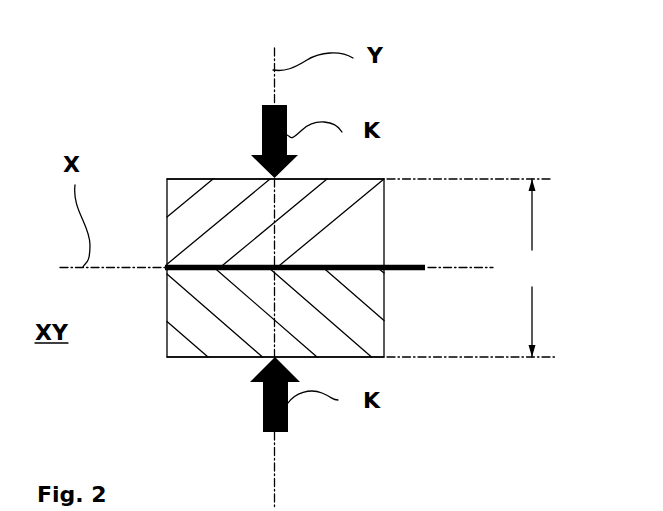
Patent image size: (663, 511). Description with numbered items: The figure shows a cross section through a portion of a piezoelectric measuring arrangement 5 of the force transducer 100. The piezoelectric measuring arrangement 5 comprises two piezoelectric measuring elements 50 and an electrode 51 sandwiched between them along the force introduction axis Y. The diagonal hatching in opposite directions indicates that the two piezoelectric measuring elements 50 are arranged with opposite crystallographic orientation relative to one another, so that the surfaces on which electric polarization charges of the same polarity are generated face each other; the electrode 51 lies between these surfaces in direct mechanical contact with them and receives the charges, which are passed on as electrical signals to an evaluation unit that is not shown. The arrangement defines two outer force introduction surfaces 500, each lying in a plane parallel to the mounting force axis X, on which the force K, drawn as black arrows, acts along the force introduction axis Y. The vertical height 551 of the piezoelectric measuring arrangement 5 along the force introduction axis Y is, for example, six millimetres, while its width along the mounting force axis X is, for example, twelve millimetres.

The piezoelectric measuring arrangement 5 is at (189, 129).
The force transducer 100 is at (237, 197).
The outer force introduction surfaces 500 is at (183, 177).
The piezoelectric measuring elements 50 is at (357, 187).
The electrode 51 is at (400, 265).
The vertical height 551 is at (535, 268).